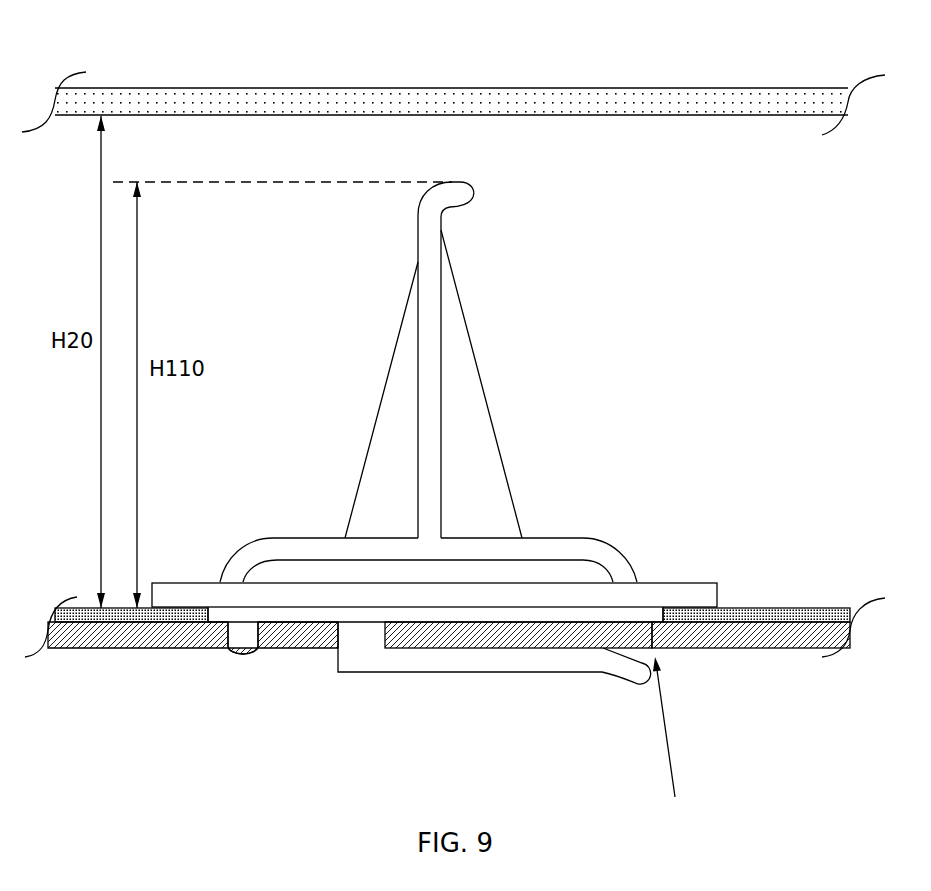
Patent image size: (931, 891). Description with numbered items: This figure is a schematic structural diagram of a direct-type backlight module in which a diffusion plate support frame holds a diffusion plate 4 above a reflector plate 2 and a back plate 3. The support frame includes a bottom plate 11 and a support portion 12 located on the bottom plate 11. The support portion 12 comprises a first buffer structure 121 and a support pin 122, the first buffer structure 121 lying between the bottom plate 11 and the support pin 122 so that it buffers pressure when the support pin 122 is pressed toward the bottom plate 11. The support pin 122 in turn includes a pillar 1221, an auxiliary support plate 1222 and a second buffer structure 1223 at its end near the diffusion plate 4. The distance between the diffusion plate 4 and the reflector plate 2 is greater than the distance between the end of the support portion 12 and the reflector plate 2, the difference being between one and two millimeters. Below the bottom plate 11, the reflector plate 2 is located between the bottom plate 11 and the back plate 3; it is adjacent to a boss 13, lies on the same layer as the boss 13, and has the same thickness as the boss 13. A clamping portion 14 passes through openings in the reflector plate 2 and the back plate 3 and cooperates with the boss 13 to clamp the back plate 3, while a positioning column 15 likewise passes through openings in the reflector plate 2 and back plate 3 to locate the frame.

The diffusion plate 4 is at (523, 103).
The reflector plate 2 is at (817, 605).
The back plate 3 is at (700, 632).
The bottom plate 11 is at (658, 593).
The support portion 12 is at (474, 382).
The first buffer structure 121 is at (449, 501).
The support pin 122 is at (509, 360).
The pillar 1221 is at (434, 311).
The auxiliary support plate 1222 is at (617, 218).
The second buffer structure 1223 is at (449, 207).
The boss 13 is at (513, 612).
The clamping portion 14 is at (402, 663).
The positioning column 15 is at (248, 648).